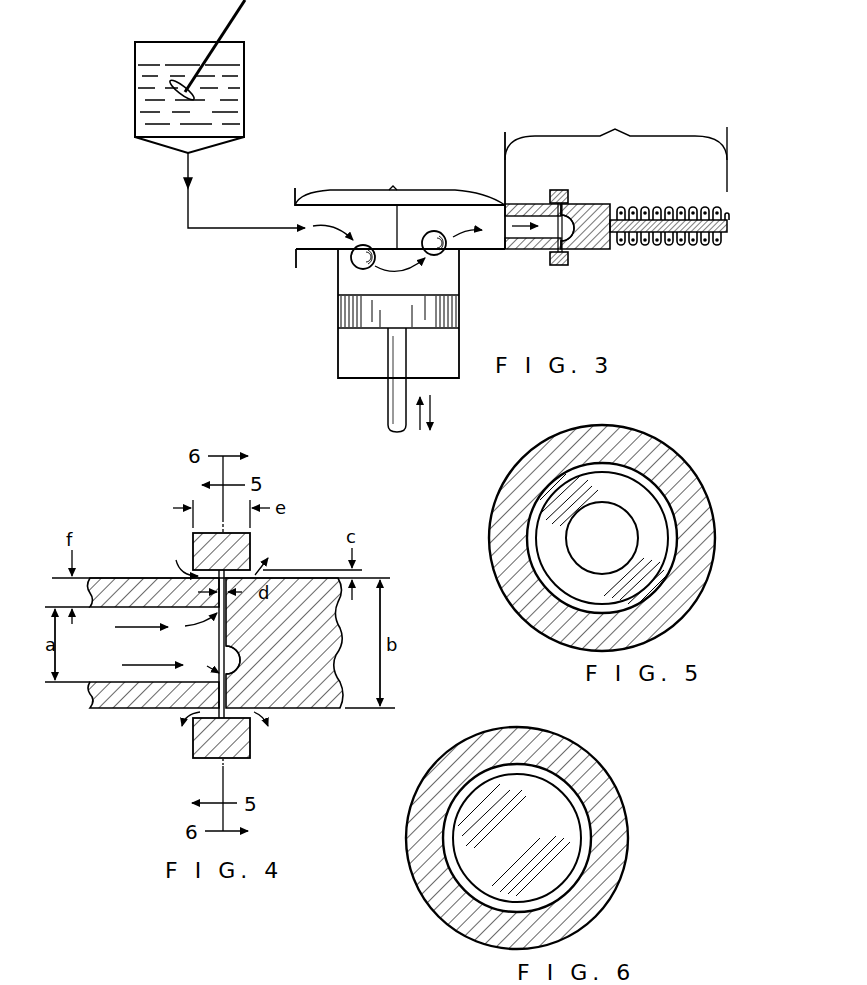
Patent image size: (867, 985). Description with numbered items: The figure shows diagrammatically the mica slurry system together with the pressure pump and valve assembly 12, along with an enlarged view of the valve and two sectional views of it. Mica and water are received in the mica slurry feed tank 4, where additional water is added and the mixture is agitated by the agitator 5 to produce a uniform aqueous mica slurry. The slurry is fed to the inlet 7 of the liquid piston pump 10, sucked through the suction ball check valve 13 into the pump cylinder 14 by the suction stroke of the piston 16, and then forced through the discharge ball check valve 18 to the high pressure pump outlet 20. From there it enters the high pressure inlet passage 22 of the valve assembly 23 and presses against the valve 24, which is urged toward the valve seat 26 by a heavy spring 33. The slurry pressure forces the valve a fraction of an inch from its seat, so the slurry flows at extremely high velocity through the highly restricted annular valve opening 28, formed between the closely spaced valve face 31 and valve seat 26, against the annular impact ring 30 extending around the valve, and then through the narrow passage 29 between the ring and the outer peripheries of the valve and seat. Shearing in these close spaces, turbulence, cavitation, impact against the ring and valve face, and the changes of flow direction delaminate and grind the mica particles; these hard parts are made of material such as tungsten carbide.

In FIG. 3, the mica slurry feed tank 4 is at (135, 110).
In FIG. 3, the agitator 5 is at (228, 26).
In FIG. 3, the inlet 7 is at (302, 238).
In FIG. 3, the liquid piston pump 10 is at (400, 185).
In FIG. 3, the pressure pump and valve assembly 12 is at (489, 176).
In FIG. 3, the suction ball check valve 13 is at (355, 265).
In FIG. 3, the pump cylinder 14 is at (350, 356).
In FIG. 3, the piston 16 is at (355, 320).
In FIG. 3, the discharge ball check valve 18 is at (447, 252).
In FIG. 3, the high pressure pump outlet 20 is at (490, 237).
In FIG. 3, the high pressure inlet passage 22 is at (537, 232).
In FIG. 4, the high pressure inlet passage 22 is at (124, 701).
In FIG. 5, the high pressure inlet passage 22 is at (610, 546).
In FIG. 3, the valve assembly 23 is at (616, 151).
In FIG. 3, the valve 24 is at (600, 208).
In FIG. 4, the valve 24 is at (303, 587).
In FIG. 3, the valve seat 26 is at (546, 204).
In FIG. 4, the valve seat 26 is at (216, 698).
In FIG. 5, the valve seat 26 is at (652, 528).
In FIG. 3, the valve opening 28 is at (582, 203).
In FIG. 4, the valve opening 28 is at (229, 695).
In FIG. 3, the narrow passage 29 is at (561, 194).
In FIG. 4, the narrow passage 29 is at (240, 558).
In FIG. 5, the narrow passage 29 is at (670, 544).
In FIG. 6, the narrow passage 29 is at (585, 824).
In FIG. 3, the annular impact ring 30 is at (560, 265).
In FIG. 4, the annular impact ring 30 is at (238, 742).
In FIG. 5, the annular impact ring 30 is at (688, 488).
In FIG. 6, the annular impact ring 30 is at (568, 752).
In FIG. 3, the valve face 31 is at (584, 232).
In FIG. 4, the valve face 31 is at (243, 662).
In FIG. 6, the valve face 31 is at (540, 806).
In FIG. 3, the spring 33 is at (690, 198).